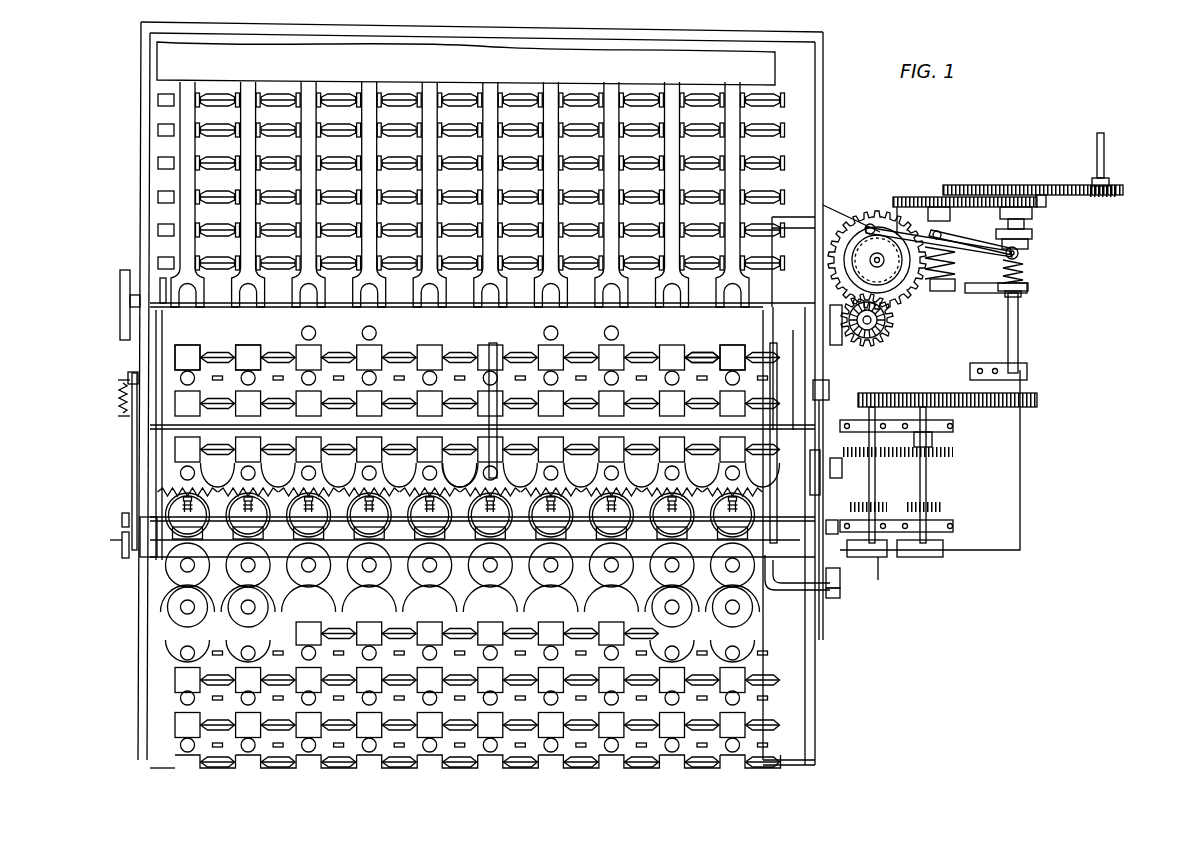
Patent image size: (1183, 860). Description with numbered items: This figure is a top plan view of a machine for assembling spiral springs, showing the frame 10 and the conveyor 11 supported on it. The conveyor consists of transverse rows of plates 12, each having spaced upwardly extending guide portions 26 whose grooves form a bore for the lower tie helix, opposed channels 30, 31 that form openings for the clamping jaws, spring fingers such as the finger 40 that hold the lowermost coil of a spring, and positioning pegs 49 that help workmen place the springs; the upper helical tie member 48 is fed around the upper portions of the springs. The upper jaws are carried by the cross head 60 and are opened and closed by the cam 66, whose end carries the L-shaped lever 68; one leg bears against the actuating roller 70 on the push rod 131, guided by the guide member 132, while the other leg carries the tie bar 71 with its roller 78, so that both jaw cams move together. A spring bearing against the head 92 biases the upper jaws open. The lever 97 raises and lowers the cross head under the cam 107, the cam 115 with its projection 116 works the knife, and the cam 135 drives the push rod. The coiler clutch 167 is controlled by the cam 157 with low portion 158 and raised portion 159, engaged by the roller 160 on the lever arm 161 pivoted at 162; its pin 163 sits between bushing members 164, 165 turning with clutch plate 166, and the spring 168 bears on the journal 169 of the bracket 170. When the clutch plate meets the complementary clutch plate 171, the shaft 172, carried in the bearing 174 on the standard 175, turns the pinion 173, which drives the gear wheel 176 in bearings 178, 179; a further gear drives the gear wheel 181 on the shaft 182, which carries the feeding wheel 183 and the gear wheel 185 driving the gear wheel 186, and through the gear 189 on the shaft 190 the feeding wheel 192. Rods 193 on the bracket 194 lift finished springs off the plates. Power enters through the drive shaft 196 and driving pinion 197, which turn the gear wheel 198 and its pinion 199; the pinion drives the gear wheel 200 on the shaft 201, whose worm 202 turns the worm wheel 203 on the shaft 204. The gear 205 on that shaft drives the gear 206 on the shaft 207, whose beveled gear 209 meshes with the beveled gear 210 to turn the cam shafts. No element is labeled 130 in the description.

The frame 10 is at (150, 190).
The conveyor 11 is at (143, 545).
The plates 12 is at (576, 745).
The guide portions 26 is at (517, 94).
The channel 30 is at (440, 380).
The channel 31 is at (542, 398).
The spring finger 40 is at (400, 374).
The helical tie member 48 is at (447, 472).
The positioning pegs 49 is at (180, 473).
The cross head 60 is at (160, 580).
The opening and closing cam 66 is at (800, 585).
The L-shaped lever 68 is at (122, 541).
The actuating roller 70 is at (125, 513).
The tie bar 71 is at (838, 568).
The roller 78 is at (830, 594).
The head 92 is at (192, 500).
The lever 97 is at (175, 366).
The cam 107 is at (162, 283).
The cam 115 is at (770, 292).
The projection 116 is at (716, 357).
The rod 130 is at (822, 630).
The push rod 131 is at (122, 398).
The guide member 132 is at (132, 441).
The cam 135 is at (120, 290).
The cam 157 is at (836, 246).
The low portion 158 is at (840, 262).
The raised portion 159 is at (881, 266).
The roller 160 is at (875, 212).
The lever arm 161 is at (903, 195).
The pivot 162 is at (938, 196).
The pin 163 is at (1020, 253).
The bushing member 164 is at (1030, 248).
The bushing member 165 is at (1025, 262).
The clutch plate 166 is at (1034, 232).
The clutch 167 is at (1068, 195).
The spring 168 is at (1025, 275).
The journal 169 is at (1025, 290).
The bracket 170 is at (992, 293).
The clutch plate 171 is at (1000, 185).
The shaft 172 is at (1020, 348).
The pinion 173 is at (1040, 400).
The bearing 174 is at (1030, 375).
The standard 175 is at (985, 408).
The gear wheel 176 is at (962, 412).
The bearing 178 is at (926, 428).
The bearing 179 is at (950, 533).
The gear wheel 181 is at (946, 507).
The shaft 182 is at (930, 482).
The feeding wheel 183 is at (933, 558).
The gear wheel 185 is at (953, 454).
The gear wheel 186 is at (842, 457).
The gear 189 is at (900, 497).
The shaft 190 is at (874, 466).
The feeding wheel 192 is at (902, 578).
The rods 193 is at (362, 96).
The bracket 194 is at (290, 346).
The drive shaft 196 is at (1107, 160).
The driving pinion 197 is at (1114, 188).
The gear wheel 198 is at (1094, 133).
The pinion 199 is at (1020, 206).
The gear wheel 200 is at (897, 197).
The shaft 201 is at (950, 292).
The worm 202 is at (953, 247).
The worm wheel 203 is at (852, 218).
The shaft 204 is at (884, 282).
The gear 205 is at (840, 220).
The gear 206 is at (872, 346).
The shaft 207 is at (872, 324).
The beveled gear 209 is at (842, 345).
The beveled gear 210 is at (735, 347).